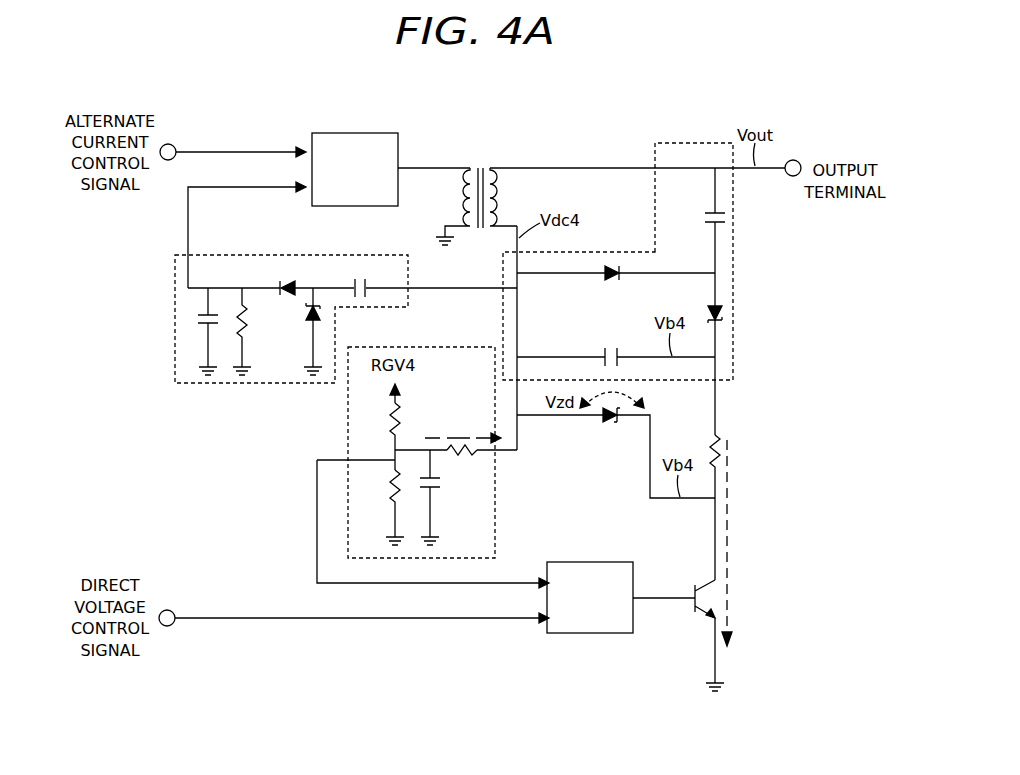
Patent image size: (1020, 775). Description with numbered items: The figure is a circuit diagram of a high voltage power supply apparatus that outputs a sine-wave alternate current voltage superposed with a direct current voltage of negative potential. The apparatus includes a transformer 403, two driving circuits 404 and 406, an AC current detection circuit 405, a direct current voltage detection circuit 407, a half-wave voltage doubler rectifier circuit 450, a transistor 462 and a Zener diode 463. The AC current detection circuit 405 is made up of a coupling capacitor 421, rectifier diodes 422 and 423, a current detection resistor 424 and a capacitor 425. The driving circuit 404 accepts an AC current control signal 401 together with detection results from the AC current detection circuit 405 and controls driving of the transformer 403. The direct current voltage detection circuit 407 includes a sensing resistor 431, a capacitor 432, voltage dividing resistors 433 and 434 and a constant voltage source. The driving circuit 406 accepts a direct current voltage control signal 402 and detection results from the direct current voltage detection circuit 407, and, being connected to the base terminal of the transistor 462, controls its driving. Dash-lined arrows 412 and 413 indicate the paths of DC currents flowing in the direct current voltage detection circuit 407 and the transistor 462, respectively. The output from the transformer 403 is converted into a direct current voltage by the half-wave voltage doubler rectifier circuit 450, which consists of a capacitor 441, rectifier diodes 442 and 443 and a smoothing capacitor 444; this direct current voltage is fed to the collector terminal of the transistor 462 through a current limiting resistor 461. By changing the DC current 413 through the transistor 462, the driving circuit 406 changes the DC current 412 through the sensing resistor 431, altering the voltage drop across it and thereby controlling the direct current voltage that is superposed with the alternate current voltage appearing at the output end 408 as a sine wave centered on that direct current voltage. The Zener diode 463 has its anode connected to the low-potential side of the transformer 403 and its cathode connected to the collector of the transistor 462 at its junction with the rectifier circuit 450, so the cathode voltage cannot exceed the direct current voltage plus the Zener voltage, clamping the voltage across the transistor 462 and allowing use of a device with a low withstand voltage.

The AC current control signal 401 is at (176, 146).
The direct current voltage control signal 402 is at (174, 611).
The transformer 403 is at (480, 165).
The driving circuit 404 is at (355, 133).
The AC current detection circuit 405 is at (324, 315).
The driving circuit 406 is at (590, 562).
The direct current voltage detection circuit 407 is at (386, 428).
The output end 408 is at (798, 161).
The DC current 412 is at (458, 437).
The DC current 413 is at (730, 446).
The coupling capacitor 421 is at (360, 280).
The rectifier diode 422 is at (309, 322).
The rectifier diode 423 is at (285, 282).
The current detection resistor 424 is at (236, 335).
The capacitor 425 is at (200, 326).
The sensing resistor 431 is at (462, 455).
The capacitor 432 is at (436, 490).
The voltage dividing resistor 433 is at (388, 416).
The voltage dividing resistor 434 is at (388, 486).
The capacitor 441 is at (710, 212).
The rectifier diode 442 is at (612, 267).
The rectifier diode 443 is at (708, 312).
The smoothing capacitor 444 is at (610, 348).
The half-wave voltage doubler rectifier circuit 450 is at (647, 289).
The current limiting resistor 461 is at (712, 444).
The transistor 462 is at (700, 588).
The Zener diode 463 is at (610, 425).